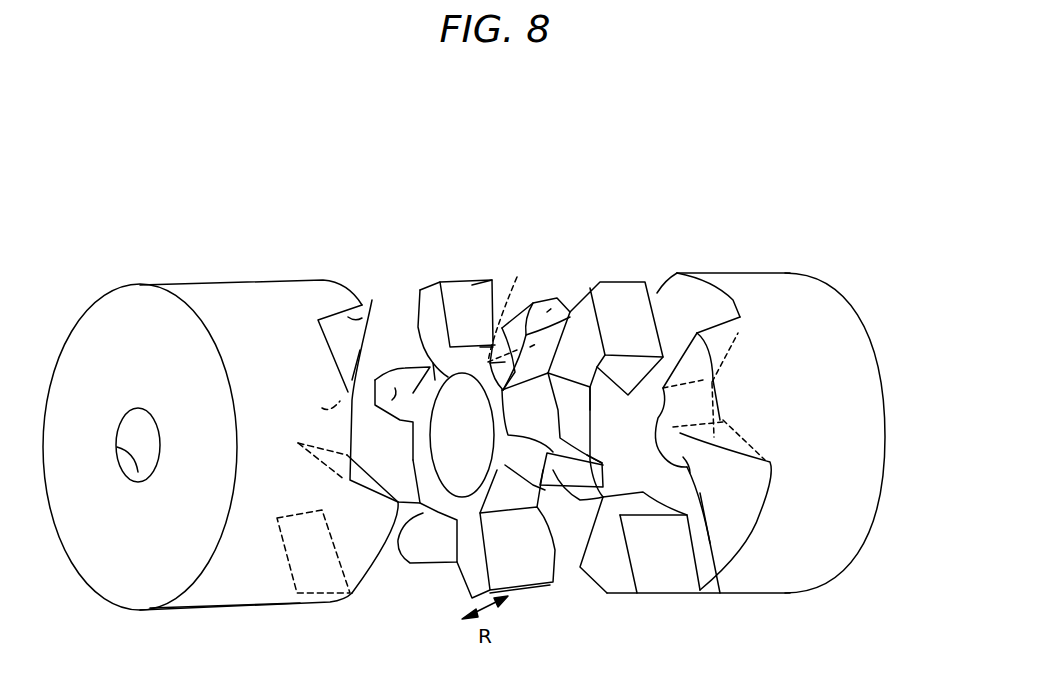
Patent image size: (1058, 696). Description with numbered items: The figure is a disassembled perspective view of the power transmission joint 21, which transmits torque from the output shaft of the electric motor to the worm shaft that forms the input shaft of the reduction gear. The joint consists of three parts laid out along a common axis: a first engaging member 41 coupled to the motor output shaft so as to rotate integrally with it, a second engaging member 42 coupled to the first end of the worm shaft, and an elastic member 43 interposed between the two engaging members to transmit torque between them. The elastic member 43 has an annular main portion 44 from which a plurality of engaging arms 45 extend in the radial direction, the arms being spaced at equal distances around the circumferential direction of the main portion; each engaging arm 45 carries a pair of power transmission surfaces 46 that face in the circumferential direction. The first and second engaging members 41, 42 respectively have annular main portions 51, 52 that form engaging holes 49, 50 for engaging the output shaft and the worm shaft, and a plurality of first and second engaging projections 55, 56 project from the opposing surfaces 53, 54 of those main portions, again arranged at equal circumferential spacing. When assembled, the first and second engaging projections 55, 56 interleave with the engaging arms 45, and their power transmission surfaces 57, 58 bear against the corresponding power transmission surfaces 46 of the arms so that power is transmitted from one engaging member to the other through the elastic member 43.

The power transmission joint 21 is at (636, 147).
The first engaging member 41 is at (731, 262).
The second engaging member 42 is at (232, 276).
The elastic member 43 is at (467, 266).
The annular main portion 44 is at (470, 375).
The engaging arms 45 is at (440, 282).
The power transmission surfaces 46 is at (478, 284).
The engaging hole 49 is at (720, 593).
The engaging hole 50 is at (140, 477).
The annular main portion 51 is at (850, 496).
The annular main portion 52 is at (228, 598).
The opposing surface 53 is at (680, 297).
The opposing surface 54 is at (349, 395).
The first engaging projections 55 is at (587, 305).
The second engaging projections 56 is at (323, 280).
The power transmission surfaces 57 is at (615, 303).
The power transmission surfaces 58 is at (372, 300).